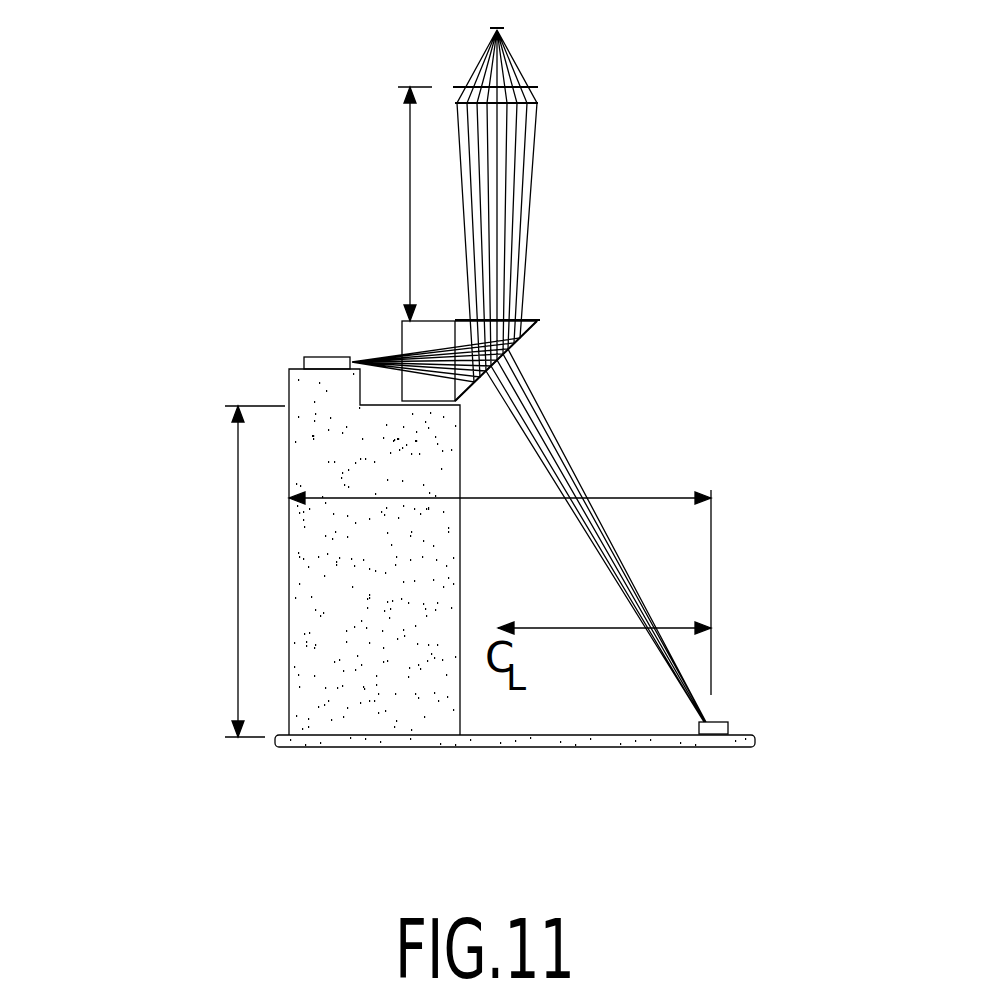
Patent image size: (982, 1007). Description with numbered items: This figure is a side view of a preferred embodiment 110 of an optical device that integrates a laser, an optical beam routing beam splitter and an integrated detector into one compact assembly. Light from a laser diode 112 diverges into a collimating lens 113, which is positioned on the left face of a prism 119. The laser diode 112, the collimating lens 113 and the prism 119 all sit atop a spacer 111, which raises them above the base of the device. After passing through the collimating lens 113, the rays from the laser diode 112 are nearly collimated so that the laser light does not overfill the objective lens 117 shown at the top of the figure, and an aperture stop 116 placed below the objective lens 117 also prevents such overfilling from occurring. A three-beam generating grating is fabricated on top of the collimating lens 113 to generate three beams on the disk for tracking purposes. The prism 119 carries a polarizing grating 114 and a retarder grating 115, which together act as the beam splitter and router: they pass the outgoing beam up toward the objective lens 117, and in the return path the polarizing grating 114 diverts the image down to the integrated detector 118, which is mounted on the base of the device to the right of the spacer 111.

The preferred embodiment 110 is at (235, 764).
The spacer 111 is at (396, 624).
The laser diode 112 is at (286, 355).
The collimating lens 113 is at (366, 334).
The polarizing grating 114 is at (535, 368).
The retarder grating 115 is at (545, 292).
The aperture stop 116 is at (563, 124).
The objective lens 117 is at (558, 78).
The integrated detector 118 is at (733, 698).
The prism 119 is at (532, 330).